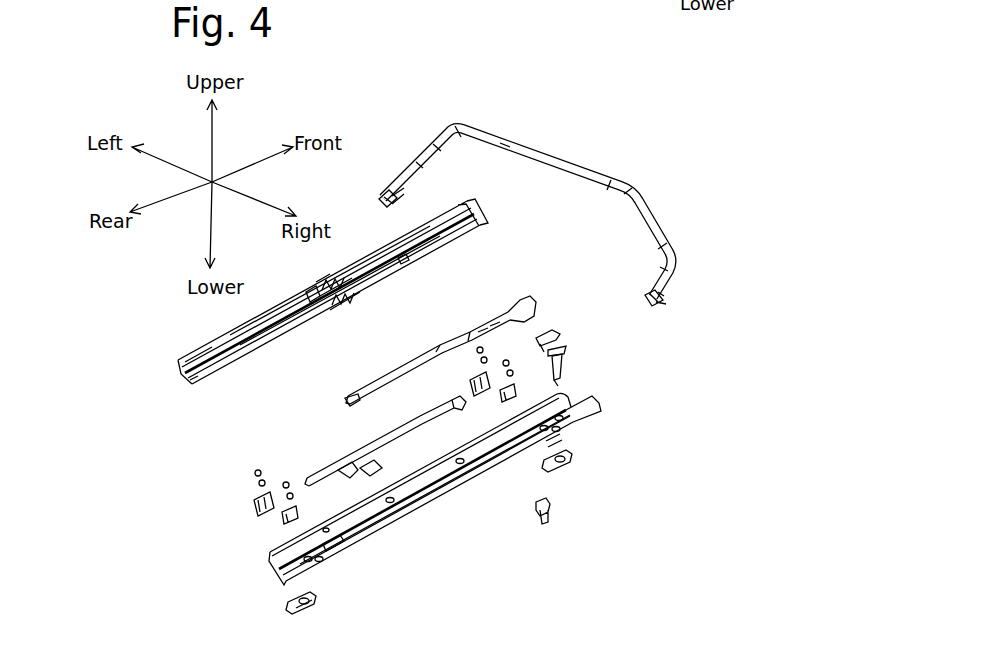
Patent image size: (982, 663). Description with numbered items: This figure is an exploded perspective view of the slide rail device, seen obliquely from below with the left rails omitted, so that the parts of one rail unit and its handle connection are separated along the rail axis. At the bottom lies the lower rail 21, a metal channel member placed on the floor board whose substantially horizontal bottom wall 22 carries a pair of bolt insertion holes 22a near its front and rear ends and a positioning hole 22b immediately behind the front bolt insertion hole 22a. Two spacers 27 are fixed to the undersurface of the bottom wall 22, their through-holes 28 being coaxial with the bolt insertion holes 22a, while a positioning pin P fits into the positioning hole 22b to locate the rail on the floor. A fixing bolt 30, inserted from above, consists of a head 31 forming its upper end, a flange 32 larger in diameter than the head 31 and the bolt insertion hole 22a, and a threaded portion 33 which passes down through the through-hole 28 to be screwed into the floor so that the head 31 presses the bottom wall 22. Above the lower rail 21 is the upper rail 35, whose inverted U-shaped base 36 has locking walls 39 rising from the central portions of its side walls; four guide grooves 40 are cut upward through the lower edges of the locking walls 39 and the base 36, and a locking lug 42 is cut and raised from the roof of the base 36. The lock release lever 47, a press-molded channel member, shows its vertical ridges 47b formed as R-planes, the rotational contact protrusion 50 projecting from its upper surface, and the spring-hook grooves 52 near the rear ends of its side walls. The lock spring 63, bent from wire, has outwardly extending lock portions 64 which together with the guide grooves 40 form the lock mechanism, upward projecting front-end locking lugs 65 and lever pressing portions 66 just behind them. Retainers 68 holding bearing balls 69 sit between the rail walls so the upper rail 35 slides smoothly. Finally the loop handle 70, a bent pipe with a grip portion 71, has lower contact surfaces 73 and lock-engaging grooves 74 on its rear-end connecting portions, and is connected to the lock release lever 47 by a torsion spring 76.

The lower rail 21 is at (474, 490).
The bottom wall 22 is at (440, 512).
The bolt insertion holes 22a is at (586, 426).
The positioning hole 22b is at (536, 444).
The spacers 27 is at (318, 602).
The through-holes 28 is at (572, 460).
The fixing bolts 30 is at (566, 364).
The head 31 is at (562, 342).
The flange 32 is at (568, 350).
The threaded portion 33 is at (590, 382).
The upper rail 35 is at (386, 240).
The base 36 is at (212, 338).
The locking walls 39 is at (312, 286).
The guide grooves 40 is at (343, 280).
The locking lug 42 is at (405, 262).
The lock release lever 47 is at (382, 376).
The ridges 47b is at (448, 342).
The rotational contact protrusion 50 is at (412, 350).
The spring-hook grooves 52 is at (346, 408).
The lock spring 63 is at (306, 476).
The lock portions 64 is at (348, 464).
The front-end locking lugs 65 is at (465, 404).
The lever pressing portions 66 is at (438, 418).
The retainers 68 is at (468, 392).
The bearing balls 69 is at (504, 326).
The loop handle 70 is at (606, 180).
The grip portion 71 is at (560, 156).
The lower contact surfaces 73 is at (383, 200).
The lock-engaging grooves 74 is at (405, 192).
The torsion springs 76 is at (552, 326).
The positioning pins P is at (546, 516).